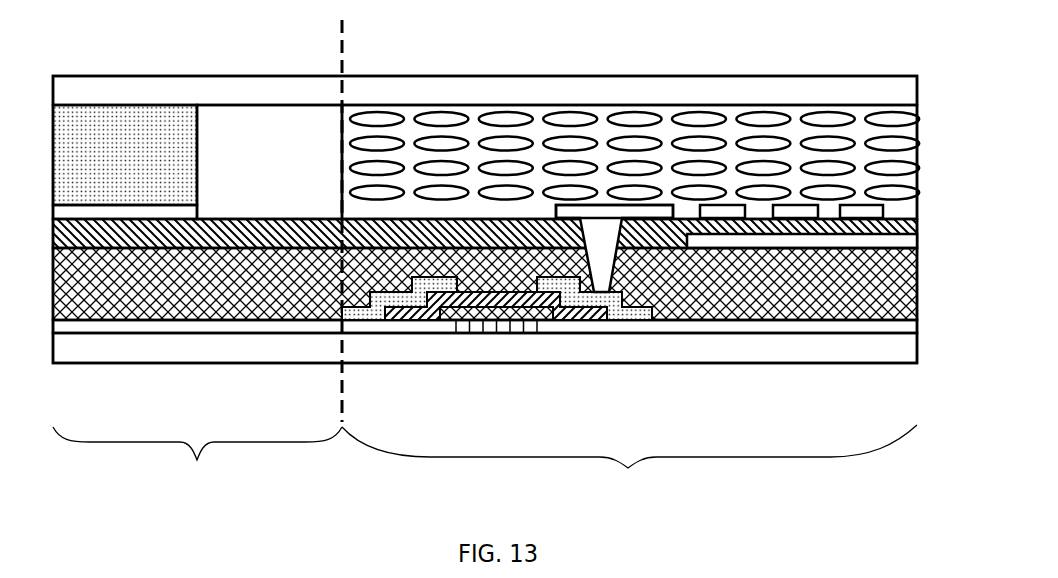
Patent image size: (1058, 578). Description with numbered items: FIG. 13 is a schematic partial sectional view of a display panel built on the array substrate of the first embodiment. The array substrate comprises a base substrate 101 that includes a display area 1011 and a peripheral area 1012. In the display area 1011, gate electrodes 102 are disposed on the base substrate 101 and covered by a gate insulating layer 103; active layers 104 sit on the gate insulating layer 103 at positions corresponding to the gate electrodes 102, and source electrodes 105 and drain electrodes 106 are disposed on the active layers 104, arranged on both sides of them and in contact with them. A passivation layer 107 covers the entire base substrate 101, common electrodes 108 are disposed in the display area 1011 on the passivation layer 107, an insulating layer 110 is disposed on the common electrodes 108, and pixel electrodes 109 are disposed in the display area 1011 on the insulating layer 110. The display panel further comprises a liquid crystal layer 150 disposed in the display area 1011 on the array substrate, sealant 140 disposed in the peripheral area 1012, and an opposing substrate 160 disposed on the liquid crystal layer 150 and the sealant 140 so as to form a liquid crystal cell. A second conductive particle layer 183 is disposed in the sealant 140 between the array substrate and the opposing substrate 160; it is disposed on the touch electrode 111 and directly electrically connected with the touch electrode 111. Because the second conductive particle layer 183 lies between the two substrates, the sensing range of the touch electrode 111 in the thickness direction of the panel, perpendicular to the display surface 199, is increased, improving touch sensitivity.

The display surface 199 is at (867, 75).
The opposing substrate 160 is at (173, 90).
The second conductive particle layer 183 is at (77, 150).
The touch electrode 111 is at (77, 213).
The sealant 140 is at (232, 162).
The liquid crystal layer 150 is at (412, 163).
The insulating layer 110 is at (303, 232).
The common electrode 108 is at (743, 243).
The pixel electrode 109 is at (645, 213).
The active layer 104 is at (517, 237).
The passivation layer 107 is at (197, 277).
The source electrode 105 is at (383, 320).
The drain electrode 106 is at (625, 318).
The gate electrode 102 is at (512, 333).
The gate insulating layer 103 is at (715, 328).
The base substrate 101 is at (815, 348).
The peripheral area 1012 is at (197, 462).
The display area 1011 is at (629, 461).